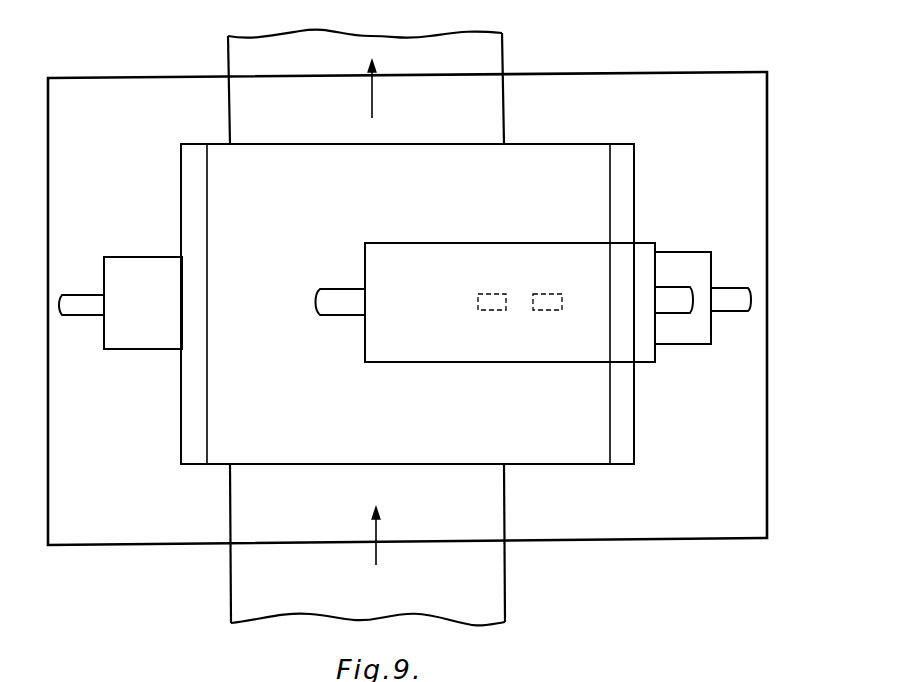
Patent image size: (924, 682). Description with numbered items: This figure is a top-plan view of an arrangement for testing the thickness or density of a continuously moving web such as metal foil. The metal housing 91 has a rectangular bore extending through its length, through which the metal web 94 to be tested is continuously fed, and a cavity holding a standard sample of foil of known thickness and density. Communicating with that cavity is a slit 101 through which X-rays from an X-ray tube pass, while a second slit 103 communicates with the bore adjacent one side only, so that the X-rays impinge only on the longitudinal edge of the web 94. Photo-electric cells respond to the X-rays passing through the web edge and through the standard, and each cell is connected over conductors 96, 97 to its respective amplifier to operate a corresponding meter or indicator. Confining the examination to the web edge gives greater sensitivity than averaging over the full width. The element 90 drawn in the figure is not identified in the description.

The print head carriage 90 is at (618, 254).
The metal housing 91 is at (227, 182).
The metal web 94 is at (487, 576).
The conductor 96 is at (75, 306).
The conductor 97 is at (727, 297).
The slit 101 is at (549, 311).
The slit 103 is at (482, 311).